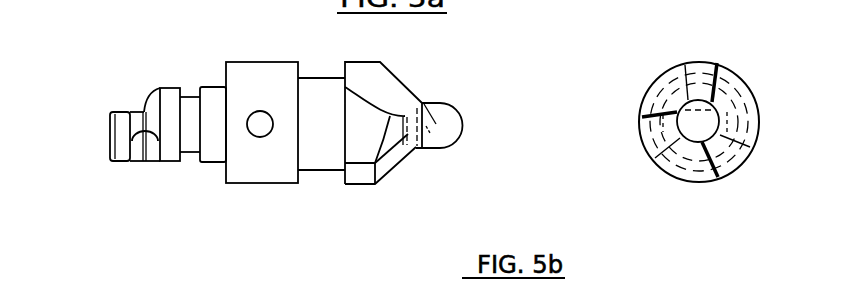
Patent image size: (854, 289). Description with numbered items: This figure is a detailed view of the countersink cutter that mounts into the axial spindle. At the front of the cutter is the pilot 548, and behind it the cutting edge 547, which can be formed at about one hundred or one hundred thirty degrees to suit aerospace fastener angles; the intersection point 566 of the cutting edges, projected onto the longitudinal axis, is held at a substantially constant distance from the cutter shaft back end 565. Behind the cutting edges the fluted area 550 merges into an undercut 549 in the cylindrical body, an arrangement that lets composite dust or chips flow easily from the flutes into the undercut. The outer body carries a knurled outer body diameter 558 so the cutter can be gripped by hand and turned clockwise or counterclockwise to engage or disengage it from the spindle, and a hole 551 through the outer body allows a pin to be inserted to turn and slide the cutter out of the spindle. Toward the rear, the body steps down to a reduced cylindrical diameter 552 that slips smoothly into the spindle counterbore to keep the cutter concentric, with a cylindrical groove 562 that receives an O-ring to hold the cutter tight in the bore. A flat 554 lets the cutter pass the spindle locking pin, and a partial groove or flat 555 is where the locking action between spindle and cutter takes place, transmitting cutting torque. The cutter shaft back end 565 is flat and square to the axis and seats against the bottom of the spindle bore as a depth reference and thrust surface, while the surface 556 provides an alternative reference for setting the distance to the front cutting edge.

The cutting edge 547 is at (392, 175).
The pilot 548 is at (433, 152).
The undercut 549 is at (318, 172).
The fluted area 550 is at (387, 87).
The hole 551 is at (257, 139).
The reduced cylindrical diameter 552 is at (210, 165).
The flat 554 is at (132, 110).
The partial groove or flat 555 is at (138, 158).
The surface 556 is at (226, 68).
The knurled outer body diameter 558 is at (270, 187).
The cylindrical groove 562 is at (189, 92).
The cutter shaft back end 565 is at (104, 139).
The intersection point 566 is at (428, 128).